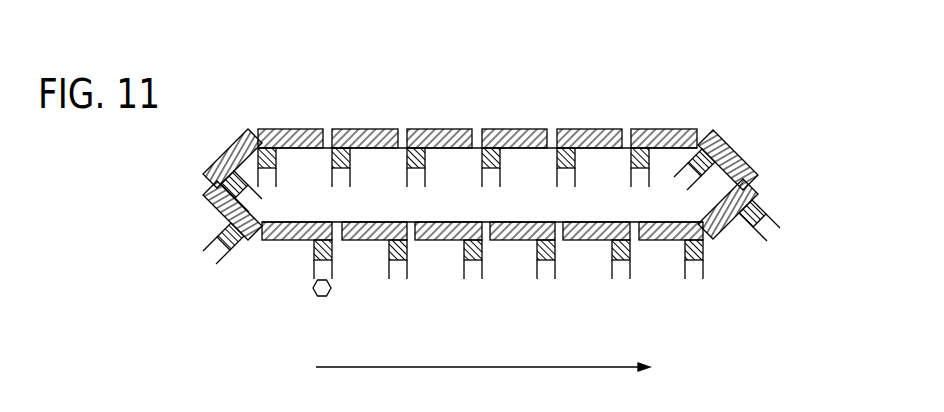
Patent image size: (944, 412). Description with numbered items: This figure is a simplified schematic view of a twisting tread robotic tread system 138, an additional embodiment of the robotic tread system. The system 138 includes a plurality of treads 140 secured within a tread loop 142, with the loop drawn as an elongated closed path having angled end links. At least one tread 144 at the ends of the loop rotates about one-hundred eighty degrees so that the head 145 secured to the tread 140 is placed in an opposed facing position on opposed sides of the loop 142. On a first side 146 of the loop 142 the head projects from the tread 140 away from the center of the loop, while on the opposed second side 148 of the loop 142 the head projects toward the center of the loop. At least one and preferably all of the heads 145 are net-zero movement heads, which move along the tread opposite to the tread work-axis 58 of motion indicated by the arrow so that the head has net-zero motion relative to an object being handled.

The twisting tread robotic tread system 138 is at (786, 96).
The treads 140 is at (516, 130).
The tread loop 142 is at (442, 208).
The rotating tread 144 is at (704, 129).
The head 145 is at (407, 163).
The first side of the loop 146 is at (442, 264).
The second side of the loop 148 is at (580, 122).
The tread work-axis 58 is at (533, 367).